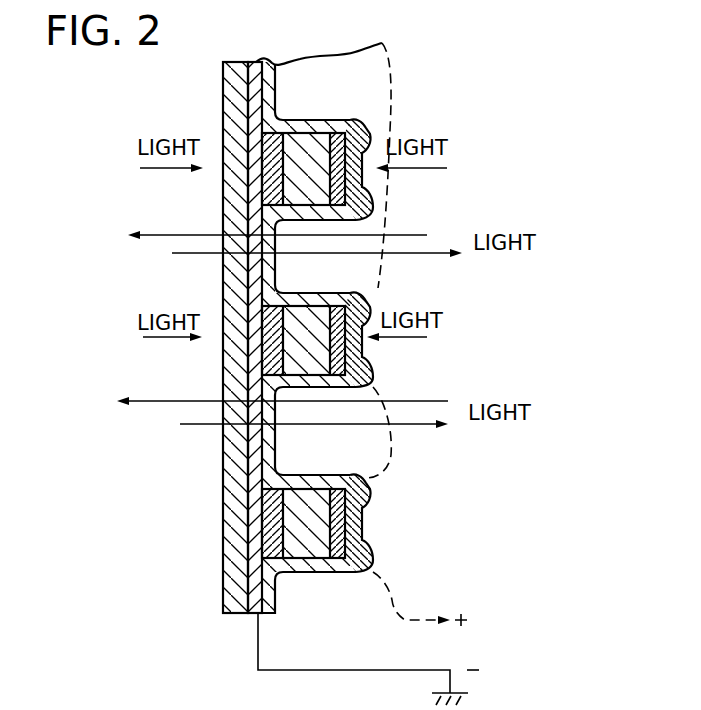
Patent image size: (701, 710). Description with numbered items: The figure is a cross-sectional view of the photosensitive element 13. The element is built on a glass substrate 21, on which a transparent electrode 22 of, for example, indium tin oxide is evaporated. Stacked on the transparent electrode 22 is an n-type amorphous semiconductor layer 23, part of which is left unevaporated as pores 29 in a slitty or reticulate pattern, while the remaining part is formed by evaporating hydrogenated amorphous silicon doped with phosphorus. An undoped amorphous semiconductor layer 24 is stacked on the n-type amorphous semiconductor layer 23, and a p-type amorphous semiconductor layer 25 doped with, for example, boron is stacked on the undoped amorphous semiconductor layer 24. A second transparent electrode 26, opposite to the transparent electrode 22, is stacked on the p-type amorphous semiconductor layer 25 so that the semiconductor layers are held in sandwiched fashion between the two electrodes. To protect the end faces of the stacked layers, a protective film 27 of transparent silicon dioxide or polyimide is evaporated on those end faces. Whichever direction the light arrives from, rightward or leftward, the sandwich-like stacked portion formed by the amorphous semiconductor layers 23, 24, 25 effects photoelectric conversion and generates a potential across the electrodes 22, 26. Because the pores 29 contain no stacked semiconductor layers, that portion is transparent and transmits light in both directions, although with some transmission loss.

The photosensitive element 13 is at (257, 62).
The glass substrate 21 is at (237, 506).
The transparent electrode 22 is at (256, 545).
The n-type amorphous semiconductor layer 23 is at (282, 546).
The undoped amorphous semiconductor layer 24 is at (313, 536).
The p-type amorphous semiconductor layer 25 is at (336, 524).
The transparent electrode 26 is at (393, 462).
The protective film 27 is at (352, 291).
The pores 29 is at (283, 453).